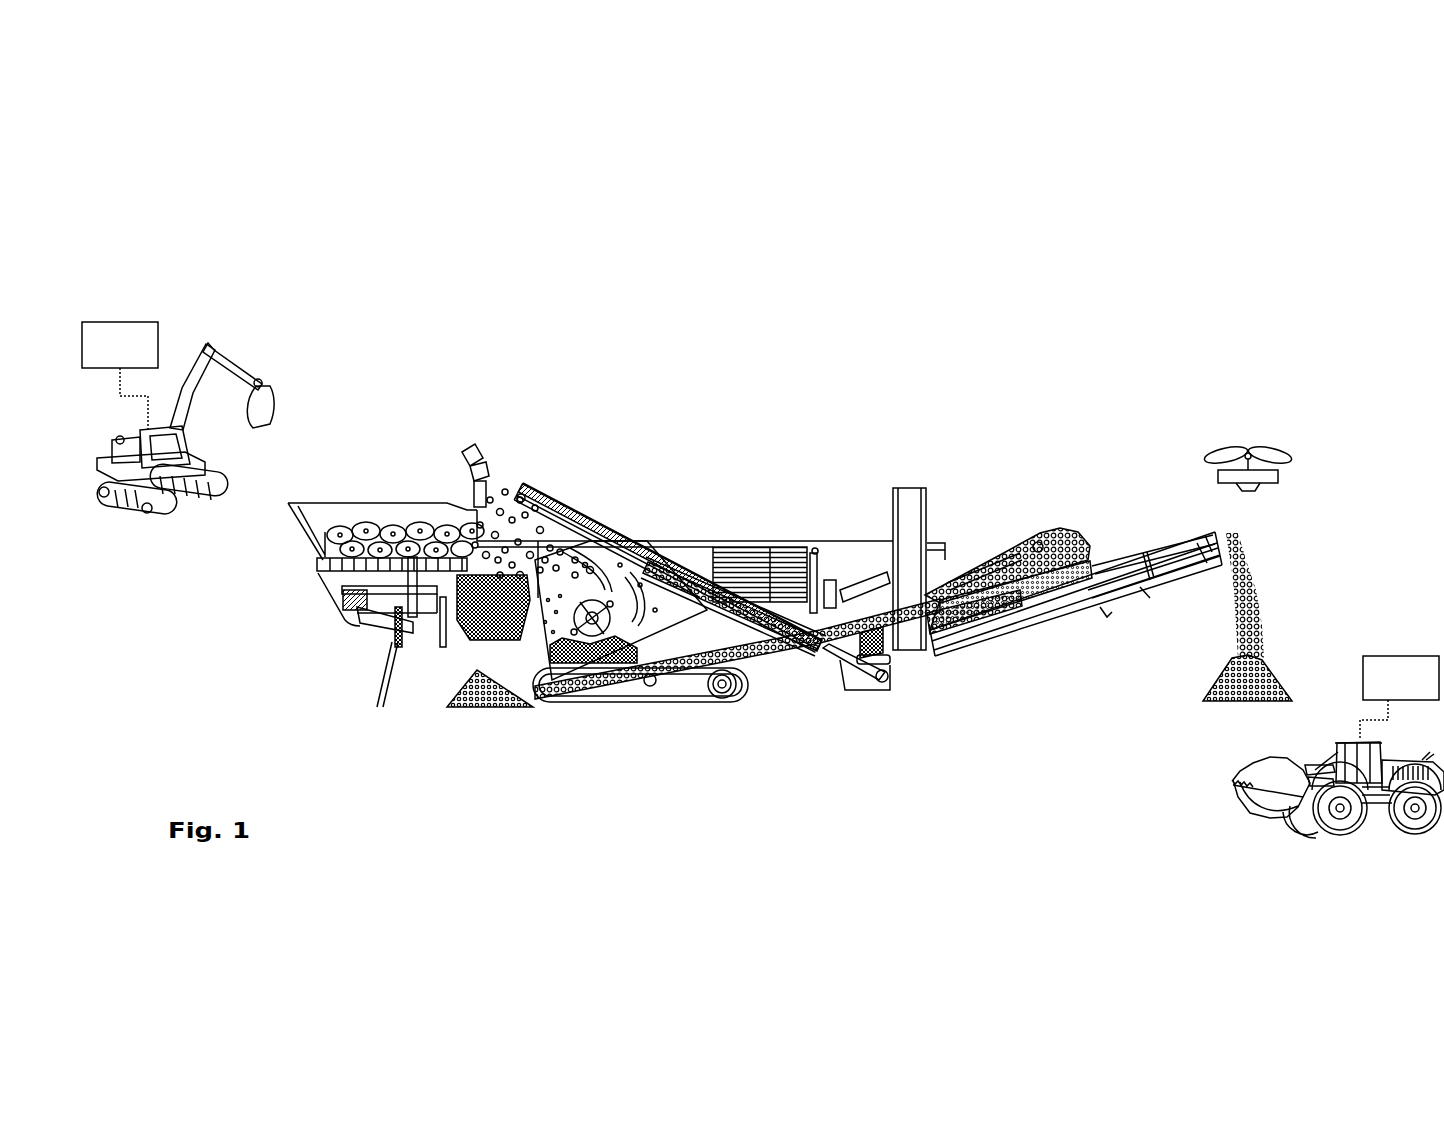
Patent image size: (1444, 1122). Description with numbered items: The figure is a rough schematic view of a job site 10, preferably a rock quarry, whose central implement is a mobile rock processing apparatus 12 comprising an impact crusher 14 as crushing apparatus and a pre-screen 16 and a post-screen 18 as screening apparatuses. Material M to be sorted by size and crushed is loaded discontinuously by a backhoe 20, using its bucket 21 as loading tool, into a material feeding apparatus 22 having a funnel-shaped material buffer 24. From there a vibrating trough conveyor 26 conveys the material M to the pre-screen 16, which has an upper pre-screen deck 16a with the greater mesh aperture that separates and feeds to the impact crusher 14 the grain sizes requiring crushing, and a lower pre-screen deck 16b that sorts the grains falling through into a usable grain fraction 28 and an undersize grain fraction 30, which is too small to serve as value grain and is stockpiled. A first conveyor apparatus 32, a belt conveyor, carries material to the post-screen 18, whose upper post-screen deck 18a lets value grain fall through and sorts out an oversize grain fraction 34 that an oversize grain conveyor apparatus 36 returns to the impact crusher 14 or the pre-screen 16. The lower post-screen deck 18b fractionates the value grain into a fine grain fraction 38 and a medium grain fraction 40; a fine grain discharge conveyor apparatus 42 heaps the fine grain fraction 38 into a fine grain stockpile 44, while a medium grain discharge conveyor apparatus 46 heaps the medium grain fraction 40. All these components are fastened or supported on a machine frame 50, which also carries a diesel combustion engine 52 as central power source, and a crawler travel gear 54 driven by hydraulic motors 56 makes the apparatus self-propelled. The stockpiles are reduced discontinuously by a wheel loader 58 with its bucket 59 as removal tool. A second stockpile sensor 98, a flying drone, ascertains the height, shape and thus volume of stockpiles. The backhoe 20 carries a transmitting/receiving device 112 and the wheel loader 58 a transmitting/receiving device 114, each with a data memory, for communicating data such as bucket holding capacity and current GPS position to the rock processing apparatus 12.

The job site 10 is at (230, 168).
The rock processing apparatus 12 is at (653, 392).
The impact crusher 14 is at (567, 623).
The pre-screen 16 is at (478, 546).
The upper pre-screen deck 16a is at (470, 556).
The lower pre-screen deck 16b is at (458, 590).
The post-screen 18 is at (1085, 545).
The upper post-screen deck 18a is at (1095, 560).
The lower post-screen deck 18b is at (1090, 580).
The backhoe 20 is at (186, 340).
The bucket 21 is at (262, 405).
The material feeding apparatus 22 is at (310, 562).
The material buffer 24 is at (302, 515).
The trough conveyor 26 is at (395, 572).
The usable grain fraction 28 is at (634, 641).
The undersize grain fraction 30 is at (460, 705).
The first conveyor apparatus 32 is at (1018, 550).
The oversize grain fraction 34 is at (597, 525).
The oversize grain conveyor apparatus 36 is at (652, 562).
The fine grain fraction 38 is at (995, 628).
The medium grain fraction 40 is at (959, 618).
The fine grain discharge conveyor apparatus 42 is at (1112, 590).
The fine grain stockpile 44 is at (1283, 680).
The medium grain discharge conveyor apparatus 46 is at (928, 500).
The machine frame 50 is at (380, 627).
The diesel combustion engine 52 is at (766, 570).
The crawler travel gear 54 is at (607, 702).
The hydraulic motors 56 is at (722, 690).
The wheel loader 58 is at (1297, 835).
The bucket 59 is at (1248, 808).
The second stockpile sensor 98 is at (1247, 440).
The transmitting/receiving device 112 is at (120, 377).
The transmitting/receiving device 114 is at (1399, 698).
The material M is at (393, 528).